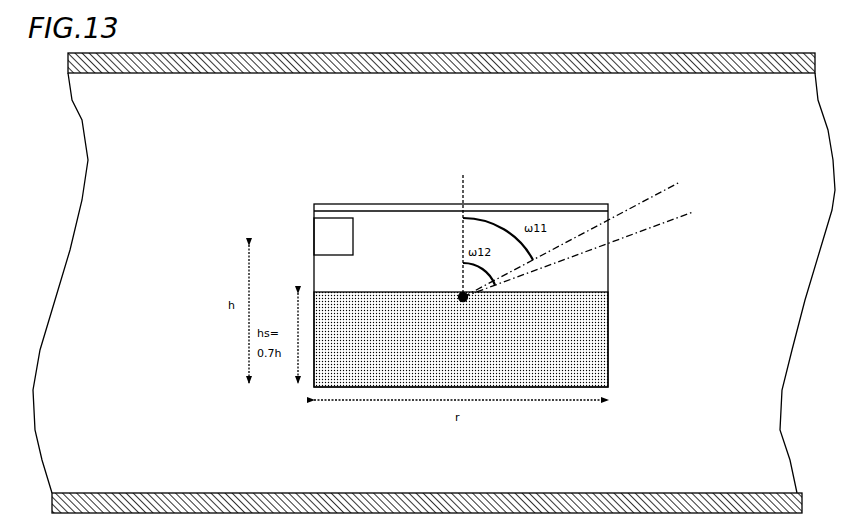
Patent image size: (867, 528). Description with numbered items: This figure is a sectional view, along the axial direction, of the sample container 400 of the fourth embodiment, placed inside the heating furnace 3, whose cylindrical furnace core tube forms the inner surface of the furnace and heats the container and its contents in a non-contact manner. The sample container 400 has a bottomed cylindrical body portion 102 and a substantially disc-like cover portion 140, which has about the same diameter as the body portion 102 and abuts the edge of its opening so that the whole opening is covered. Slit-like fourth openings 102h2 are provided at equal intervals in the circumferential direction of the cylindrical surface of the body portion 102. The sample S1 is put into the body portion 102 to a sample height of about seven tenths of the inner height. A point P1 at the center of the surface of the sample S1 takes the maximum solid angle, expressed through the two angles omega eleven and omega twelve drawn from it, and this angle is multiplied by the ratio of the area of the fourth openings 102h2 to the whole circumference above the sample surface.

The heating furnace 3 is at (196, 73).
The sample container 400 is at (726, 137).
The body portion 102 is at (701, 330).
The cover portion 140 is at (370, 204).
The fourth opening 102h2 is at (320, 238).
The sample S1 is at (620, 293).
The point on sample surface P1 is at (461, 316).